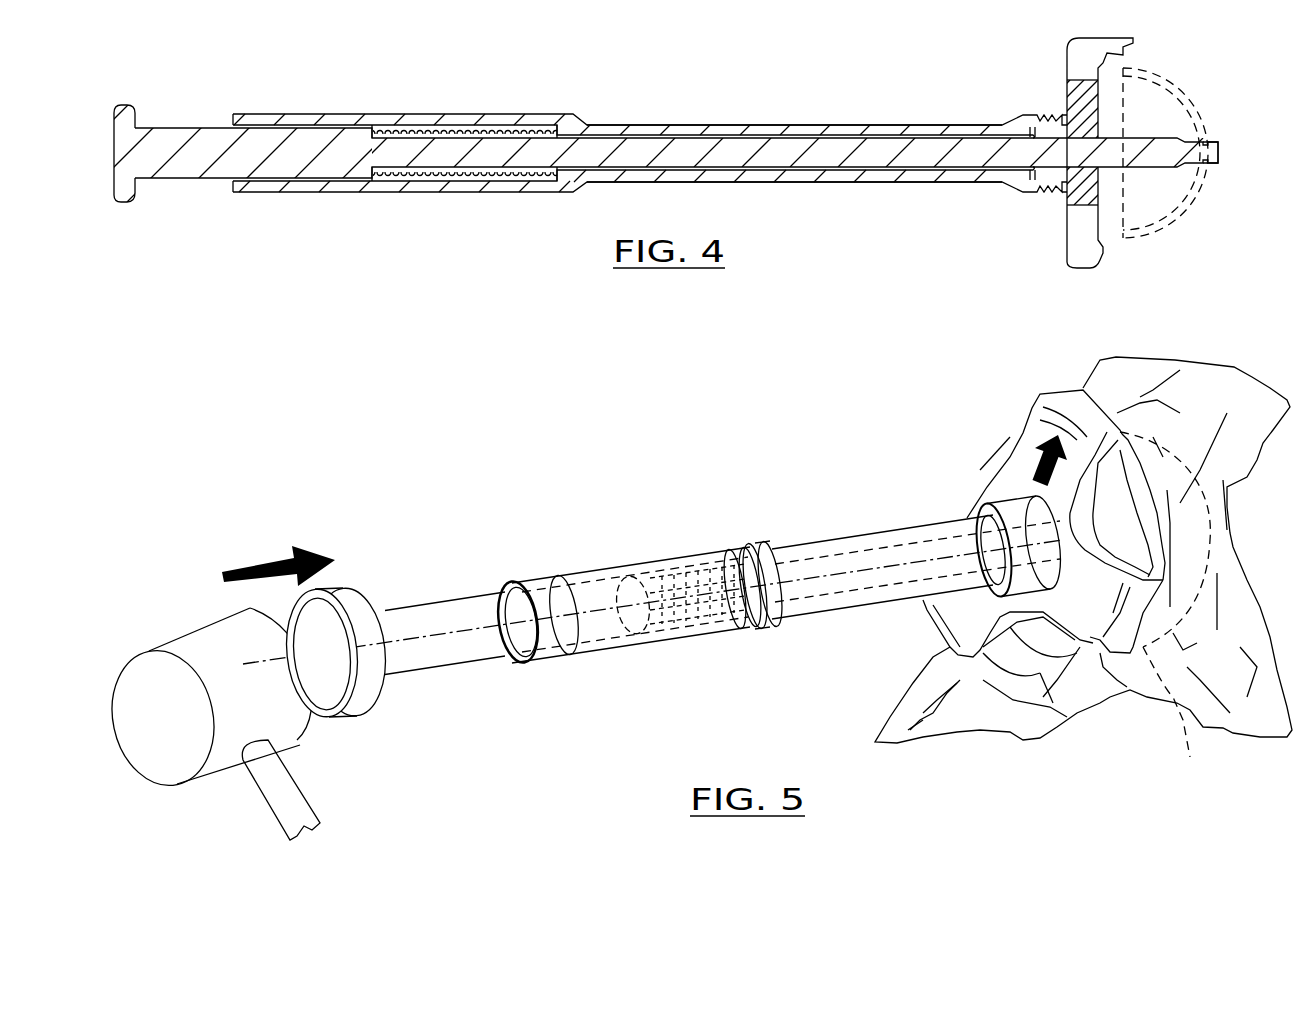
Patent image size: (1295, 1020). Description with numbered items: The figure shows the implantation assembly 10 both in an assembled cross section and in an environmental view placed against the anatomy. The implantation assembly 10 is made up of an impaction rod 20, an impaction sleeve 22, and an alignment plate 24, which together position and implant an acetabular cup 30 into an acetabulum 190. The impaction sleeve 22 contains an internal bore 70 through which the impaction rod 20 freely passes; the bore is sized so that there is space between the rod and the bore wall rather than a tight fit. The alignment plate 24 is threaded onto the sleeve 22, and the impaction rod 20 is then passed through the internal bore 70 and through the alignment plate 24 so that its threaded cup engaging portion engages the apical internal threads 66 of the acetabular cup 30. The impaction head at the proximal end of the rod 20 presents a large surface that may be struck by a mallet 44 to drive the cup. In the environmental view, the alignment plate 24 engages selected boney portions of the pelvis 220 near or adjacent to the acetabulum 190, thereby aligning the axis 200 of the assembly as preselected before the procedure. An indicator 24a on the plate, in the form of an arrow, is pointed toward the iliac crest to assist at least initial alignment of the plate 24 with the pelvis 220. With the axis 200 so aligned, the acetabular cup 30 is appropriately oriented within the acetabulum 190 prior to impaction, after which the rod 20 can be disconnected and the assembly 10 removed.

In FIG. 4, the implantation assembly 10 is at (648, 62).
In FIG. 5, the implantation assembly 10 is at (720, 506).
In FIG. 4, the impaction rod 20 is at (190, 112).
In FIG. 5, the impaction rod 20 is at (467, 597).
In FIG. 4, the impaction sleeve 22 is at (777, 110).
In FIG. 5, the impaction sleeve 22 is at (753, 548).
In FIG. 4, the alignment plate 24 is at (1073, 38).
In FIG. 5, the alignment plate 24 is at (1022, 423).
In FIG. 5, the indicator 24a is at (1032, 463).
In FIG. 4, the acetabular cup 30 is at (1191, 222).
In FIG. 5, the acetabular cup 30 is at (1097, 518).
In FIG. 5, the mallet 44 is at (296, 773).
In FIG. 4, the internal threads 66 is at (1218, 143).
In FIG. 4, the internal bore 70 is at (843, 123).
In FIG. 5, the internal bore 70 is at (840, 596).
In FIG. 5, the acetabulum 190 is at (1175, 717).
In FIG. 5, the axis 200 is at (458, 633).
In FIG. 5, the pelvis 220 is at (1193, 352).